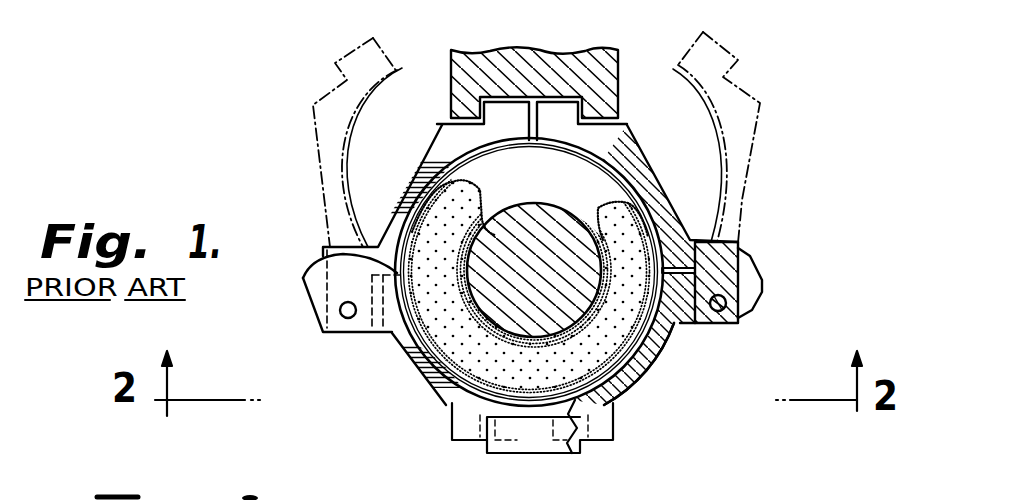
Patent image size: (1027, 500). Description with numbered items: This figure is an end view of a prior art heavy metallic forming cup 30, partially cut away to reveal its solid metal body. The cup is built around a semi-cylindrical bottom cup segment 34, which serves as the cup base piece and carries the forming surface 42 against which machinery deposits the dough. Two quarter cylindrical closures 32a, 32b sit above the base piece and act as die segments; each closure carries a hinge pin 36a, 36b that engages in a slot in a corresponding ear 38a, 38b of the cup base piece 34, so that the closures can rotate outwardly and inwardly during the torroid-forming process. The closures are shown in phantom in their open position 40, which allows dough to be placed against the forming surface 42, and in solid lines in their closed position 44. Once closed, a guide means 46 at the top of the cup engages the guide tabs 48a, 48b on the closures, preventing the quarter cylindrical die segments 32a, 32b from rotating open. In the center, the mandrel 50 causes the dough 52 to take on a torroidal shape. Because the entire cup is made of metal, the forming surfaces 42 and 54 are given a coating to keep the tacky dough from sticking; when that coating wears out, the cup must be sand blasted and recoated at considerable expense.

The forming cup 30 is at (668, 389).
The quarter cylindrical closure 32a is at (326, 173).
The quarter cylindrical closure 32b is at (742, 158).
The semi-cylindrical bottom cup segment 34 is at (455, 387).
The hinge pin 36a is at (348, 320).
The hinge pin 36b is at (718, 314).
The ear 38a is at (314, 287).
The ear 38b is at (748, 276).
The open position 40 is at (492, 123).
The forming surface 42 is at (430, 342).
The closed position 44 is at (423, 118).
The guide means 46 is at (545, 72).
The guide tab 48a is at (362, 52).
The guide tab 48b is at (712, 48).
The mandrel 50 is at (535, 253).
The dough 52 is at (546, 374).
The forming surface 54 is at (603, 179).